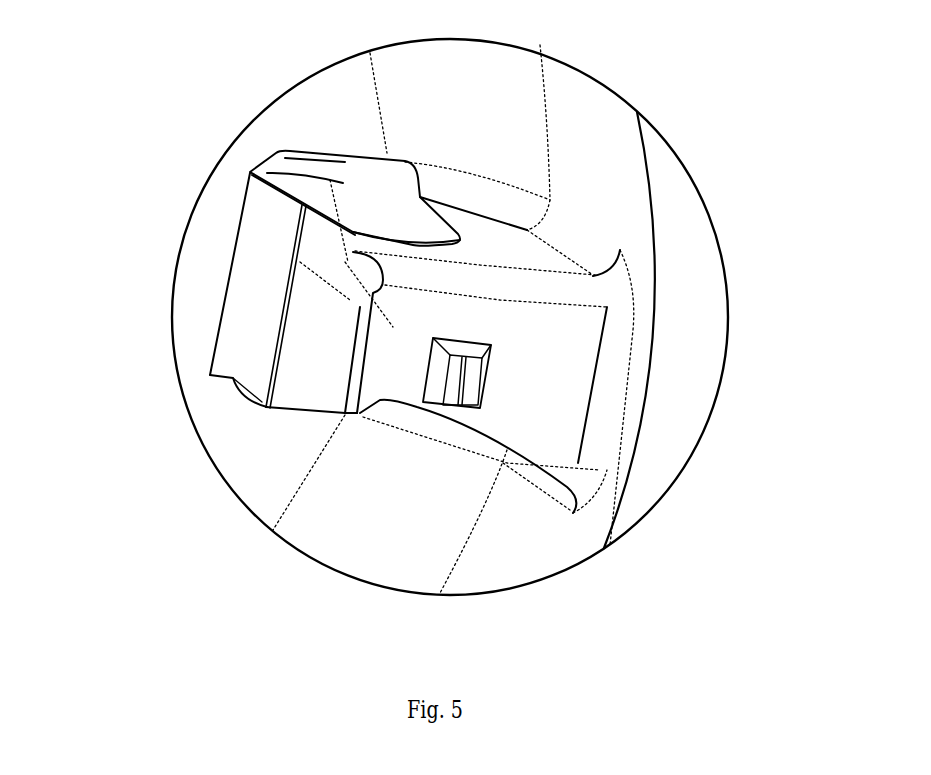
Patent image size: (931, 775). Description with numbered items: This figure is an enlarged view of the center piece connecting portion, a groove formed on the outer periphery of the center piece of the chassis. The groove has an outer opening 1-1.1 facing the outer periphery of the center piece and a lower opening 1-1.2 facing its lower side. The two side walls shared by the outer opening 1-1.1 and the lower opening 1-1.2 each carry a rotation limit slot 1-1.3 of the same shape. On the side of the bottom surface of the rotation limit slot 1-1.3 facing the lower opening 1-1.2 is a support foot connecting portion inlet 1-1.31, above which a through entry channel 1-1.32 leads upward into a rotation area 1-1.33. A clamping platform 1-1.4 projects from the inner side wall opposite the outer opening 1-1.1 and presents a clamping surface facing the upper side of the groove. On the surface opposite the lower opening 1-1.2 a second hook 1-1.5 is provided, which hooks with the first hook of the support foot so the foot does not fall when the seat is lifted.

The outer opening 1-1.1 is at (565, 355).
The lower opening 1-1.2 is at (403, 327).
The rotation limit slot 1-1.3 is at (352, 147).
The support foot connecting portion inlet 1-1.31 is at (277, 155).
The entry channel 1-1.32 is at (250, 172).
The rotation area 1-1.33 is at (382, 219).
The clamping platform 1-1.4 is at (272, 355).
The second hook 1-1.5 is at (467, 380).